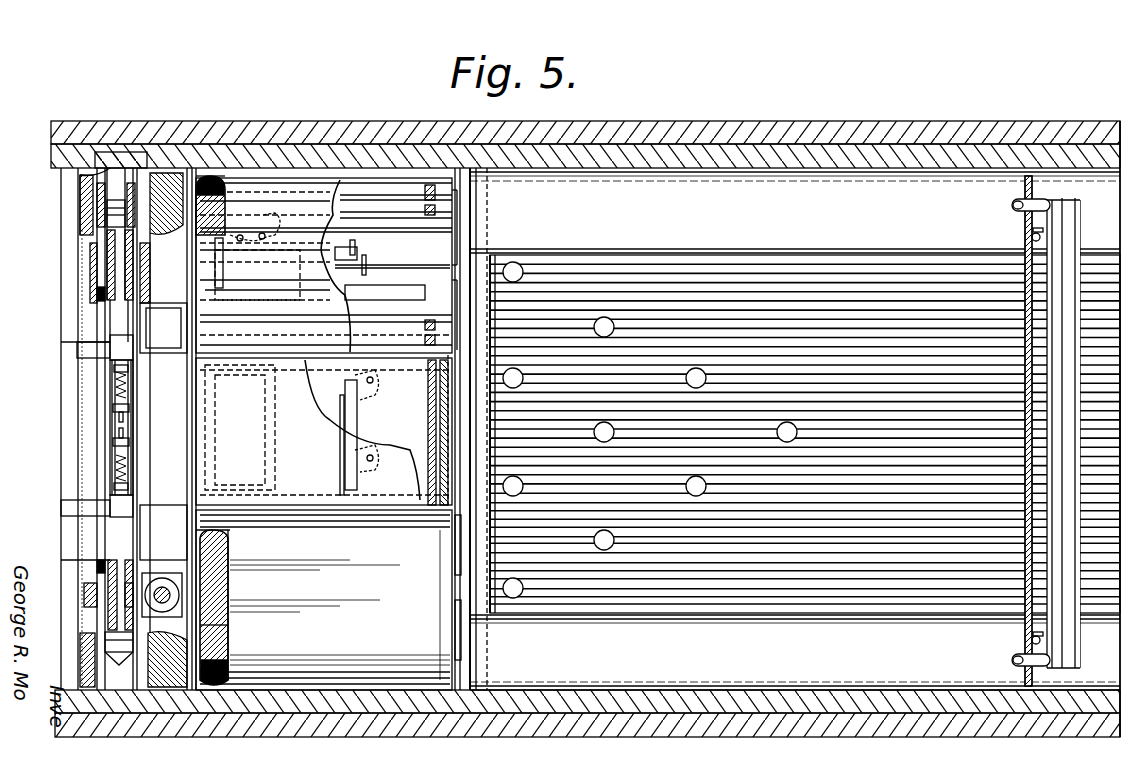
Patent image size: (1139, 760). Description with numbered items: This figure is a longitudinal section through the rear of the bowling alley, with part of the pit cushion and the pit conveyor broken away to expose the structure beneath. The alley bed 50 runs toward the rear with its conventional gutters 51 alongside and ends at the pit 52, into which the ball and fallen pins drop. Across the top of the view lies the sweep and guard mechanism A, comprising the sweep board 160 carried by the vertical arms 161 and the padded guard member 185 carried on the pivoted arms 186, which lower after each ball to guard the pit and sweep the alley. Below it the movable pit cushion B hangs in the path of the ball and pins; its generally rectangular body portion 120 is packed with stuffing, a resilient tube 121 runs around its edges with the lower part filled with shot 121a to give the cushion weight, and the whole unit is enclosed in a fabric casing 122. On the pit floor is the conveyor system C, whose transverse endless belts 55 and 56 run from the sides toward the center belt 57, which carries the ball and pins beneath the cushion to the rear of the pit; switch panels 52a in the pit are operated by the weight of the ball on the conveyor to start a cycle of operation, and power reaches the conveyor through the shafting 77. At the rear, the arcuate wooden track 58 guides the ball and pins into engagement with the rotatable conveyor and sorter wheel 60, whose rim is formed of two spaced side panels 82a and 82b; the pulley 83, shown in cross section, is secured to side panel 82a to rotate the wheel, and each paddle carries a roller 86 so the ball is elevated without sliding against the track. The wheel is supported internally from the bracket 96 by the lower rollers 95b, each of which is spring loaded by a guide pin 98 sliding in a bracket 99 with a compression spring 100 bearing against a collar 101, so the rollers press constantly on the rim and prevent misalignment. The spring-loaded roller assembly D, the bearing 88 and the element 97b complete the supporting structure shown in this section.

The alley bed 50 is at (1112, 338).
The gutters 51 is at (1112, 211).
The pit 52 is at (465, 208).
The switch panels 52a is at (240, 298).
The endless belt 55 is at (445, 640).
The endless belt 56 is at (196, 262).
The center endless belt 57 is at (330, 500).
The arcuate wooden track 58 is at (80, 182).
The rotatable conveyor and sorter wheel 60 is at (110, 321).
The shafting 77 is at (180, 595).
The side panel 82a is at (92, 255).
The side panel 82b is at (136, 245).
The pulley 83 is at (98, 293).
The roller 86 is at (107, 213).
The bearing 88 is at (118, 190).
The lower rollers 95b is at (112, 350).
The bracket 96 is at (110, 428).
The bracket 97b is at (100, 502).
The guide pin 98 is at (130, 420).
The brackets 99 is at (130, 410).
The compression spring 100 is at (130, 393).
The collar 101 is at (118, 388).
The body portion 120 is at (230, 545).
The resilient tube 121 is at (210, 180).
The shot 121a is at (238, 180).
The fabric casing 122 is at (230, 627).
The sweep board 160 is at (1033, 237).
The vertical arms 161 is at (1033, 640).
The padded guard member 185 is at (1027, 462).
The pivoted arms 186 is at (1012, 204).
The sweep and guard mechanism A is at (1082, 312).
The movable pit cushion B is at (232, 583).
The conveyor system C is at (445, 630).
The spring unit D is at (98, 399).